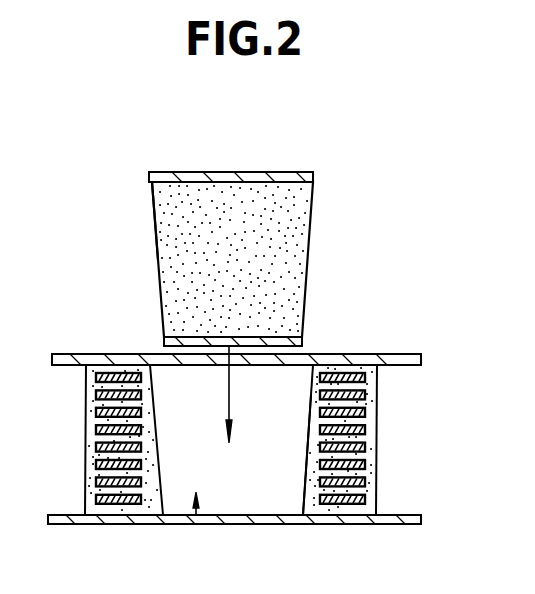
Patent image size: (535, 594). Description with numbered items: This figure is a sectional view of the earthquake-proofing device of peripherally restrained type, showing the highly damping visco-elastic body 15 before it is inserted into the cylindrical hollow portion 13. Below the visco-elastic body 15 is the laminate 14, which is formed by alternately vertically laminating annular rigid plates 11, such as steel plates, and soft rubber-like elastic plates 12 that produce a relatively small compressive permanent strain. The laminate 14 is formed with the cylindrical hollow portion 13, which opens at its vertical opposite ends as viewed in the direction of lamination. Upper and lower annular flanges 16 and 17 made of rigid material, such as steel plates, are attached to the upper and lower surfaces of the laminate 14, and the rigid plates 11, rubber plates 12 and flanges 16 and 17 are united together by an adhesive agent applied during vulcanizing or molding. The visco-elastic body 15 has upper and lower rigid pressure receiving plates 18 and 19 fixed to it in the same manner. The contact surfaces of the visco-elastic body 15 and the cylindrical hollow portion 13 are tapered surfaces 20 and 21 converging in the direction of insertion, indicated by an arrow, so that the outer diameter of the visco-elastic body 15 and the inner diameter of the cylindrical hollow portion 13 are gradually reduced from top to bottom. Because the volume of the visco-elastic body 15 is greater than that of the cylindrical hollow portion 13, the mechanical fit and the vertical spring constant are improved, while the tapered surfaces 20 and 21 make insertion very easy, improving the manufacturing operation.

The annular rigid plates 11 is at (372, 412).
The soft rubber-like elastic plates 12 is at (98, 438).
The cylindrical hollow portion 13 is at (196, 517).
The laminate 14 is at (234, 431).
The highly damping visco-elastic body 15 is at (245, 274).
The upper annular flange 16 is at (97, 356).
The lower annular flange 17 is at (120, 524).
The upper pressure receiving plate 18 is at (229, 178).
The lower pressure receiving plate 19 is at (187, 346).
The tapered surface 20 is at (304, 496).
The tapered surface 21 is at (152, 197).